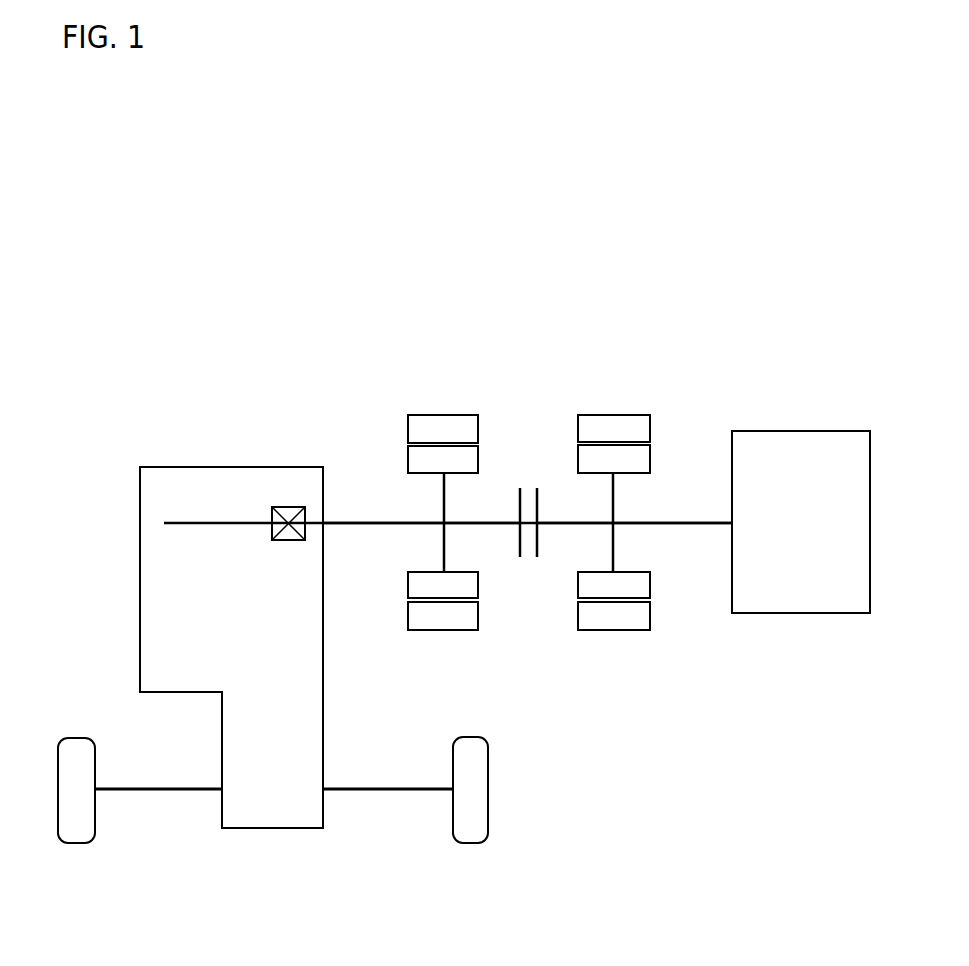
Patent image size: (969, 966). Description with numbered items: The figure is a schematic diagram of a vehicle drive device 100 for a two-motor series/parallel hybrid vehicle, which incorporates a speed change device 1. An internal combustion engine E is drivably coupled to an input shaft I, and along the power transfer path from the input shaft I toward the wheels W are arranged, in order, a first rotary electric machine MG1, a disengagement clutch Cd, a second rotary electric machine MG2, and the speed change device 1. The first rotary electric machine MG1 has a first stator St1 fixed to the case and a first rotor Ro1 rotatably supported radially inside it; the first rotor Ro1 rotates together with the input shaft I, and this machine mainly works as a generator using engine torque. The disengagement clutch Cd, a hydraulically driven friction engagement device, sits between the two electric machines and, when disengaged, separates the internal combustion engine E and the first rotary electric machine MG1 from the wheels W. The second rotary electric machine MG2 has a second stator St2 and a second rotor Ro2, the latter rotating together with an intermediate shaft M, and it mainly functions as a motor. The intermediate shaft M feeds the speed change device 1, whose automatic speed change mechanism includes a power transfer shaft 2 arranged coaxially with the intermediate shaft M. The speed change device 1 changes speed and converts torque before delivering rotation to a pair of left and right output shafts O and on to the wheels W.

The vehicle drive device 100 is at (186, 337).
The speed change device 1 is at (175, 465).
The power transfer shaft 2 is at (190, 524).
The second rotary electric machine MG2 is at (403, 466).
The second stator St2 is at (443, 429).
The second rotor Ro2 is at (443, 459).
The intermediate shaft M is at (393, 527).
The disengagement clutch Cd is at (527, 479).
The first rotary electric machine MG1 is at (648, 471).
The first stator St1 is at (614, 428).
The first rotor Ro1 is at (614, 459).
The input shaft I is at (667, 523).
The internal combustion engine E is at (793, 613).
The output shaft O is at (138, 790).
The wheels W is at (80, 835).